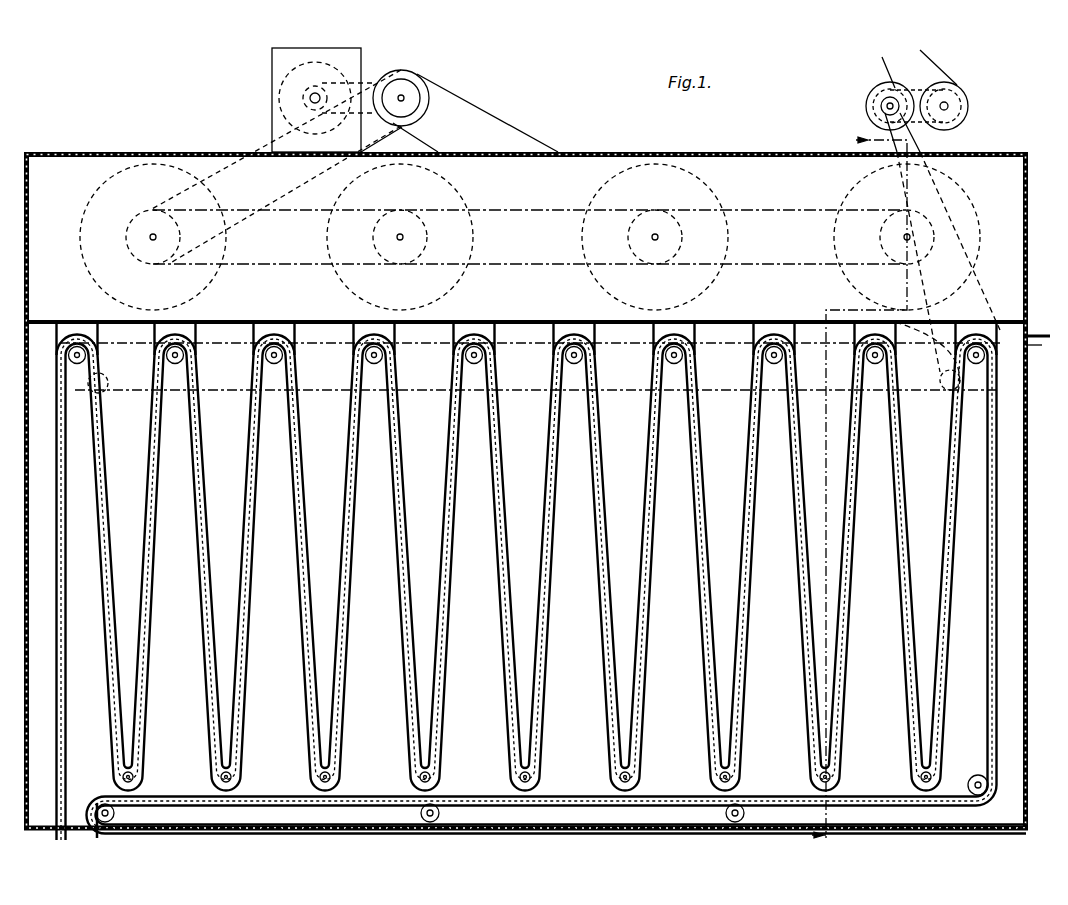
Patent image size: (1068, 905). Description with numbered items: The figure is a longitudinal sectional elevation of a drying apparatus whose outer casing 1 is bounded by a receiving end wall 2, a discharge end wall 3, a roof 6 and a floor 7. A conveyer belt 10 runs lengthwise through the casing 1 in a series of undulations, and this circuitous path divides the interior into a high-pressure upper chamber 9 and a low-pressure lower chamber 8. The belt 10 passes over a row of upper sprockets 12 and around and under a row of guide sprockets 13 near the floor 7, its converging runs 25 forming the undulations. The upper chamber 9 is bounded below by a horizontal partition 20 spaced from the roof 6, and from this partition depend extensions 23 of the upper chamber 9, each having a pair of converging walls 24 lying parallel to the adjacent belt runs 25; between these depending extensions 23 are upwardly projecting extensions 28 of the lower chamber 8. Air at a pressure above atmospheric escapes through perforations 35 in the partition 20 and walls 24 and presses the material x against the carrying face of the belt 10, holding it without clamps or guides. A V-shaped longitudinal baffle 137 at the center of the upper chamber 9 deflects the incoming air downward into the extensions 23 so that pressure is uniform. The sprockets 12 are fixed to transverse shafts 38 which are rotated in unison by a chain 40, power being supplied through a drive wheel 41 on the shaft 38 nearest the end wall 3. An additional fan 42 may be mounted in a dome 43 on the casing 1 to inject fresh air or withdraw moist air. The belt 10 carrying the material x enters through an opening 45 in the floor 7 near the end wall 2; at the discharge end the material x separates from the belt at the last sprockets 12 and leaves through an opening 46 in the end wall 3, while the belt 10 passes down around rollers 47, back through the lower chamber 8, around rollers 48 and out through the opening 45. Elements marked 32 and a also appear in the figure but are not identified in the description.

The outer casing 1 is at (1029, 486).
The end wall 2 is at (0, 536).
The end wall 3 is at (1029, 546).
The roof 6 is at (590, 152).
The floor 7 is at (582, 816).
The lower chamber 8 is at (580, 780).
The upper chamber 9 is at (526, 310).
The conveyer belt 10 is at (443, 510).
The upper sprockets 12 is at (96, 388).
The guide sprockets 13 is at (134, 772).
The horizontal partition 20 is at (283, 322).
The extensions of the upper chamber 23 is at (276, 461).
The converging walls 24 is at (152, 532).
The converging runs 25 is at (60, 788).
The extensions of the lower chamber 28 is at (471, 667).
The drive pulleys 32 is at (218, 270).
The perforations 35 is at (192, 322).
The shafts 38 is at (77, 355).
The chain 40 is at (226, 343).
The drive wheel 41 is at (945, 330).
The fan 42 is at (288, 80).
The dome 43 is at (272, 113).
The opening 45 is at (83, 824).
The opening 46 is at (1042, 350).
The rollers 47 is at (974, 778).
The rollers 48 is at (114, 816).
The longitudinal baffle 137 is at (530, 237).
The point a is at (60, 768).
The material x is at (76, 322).